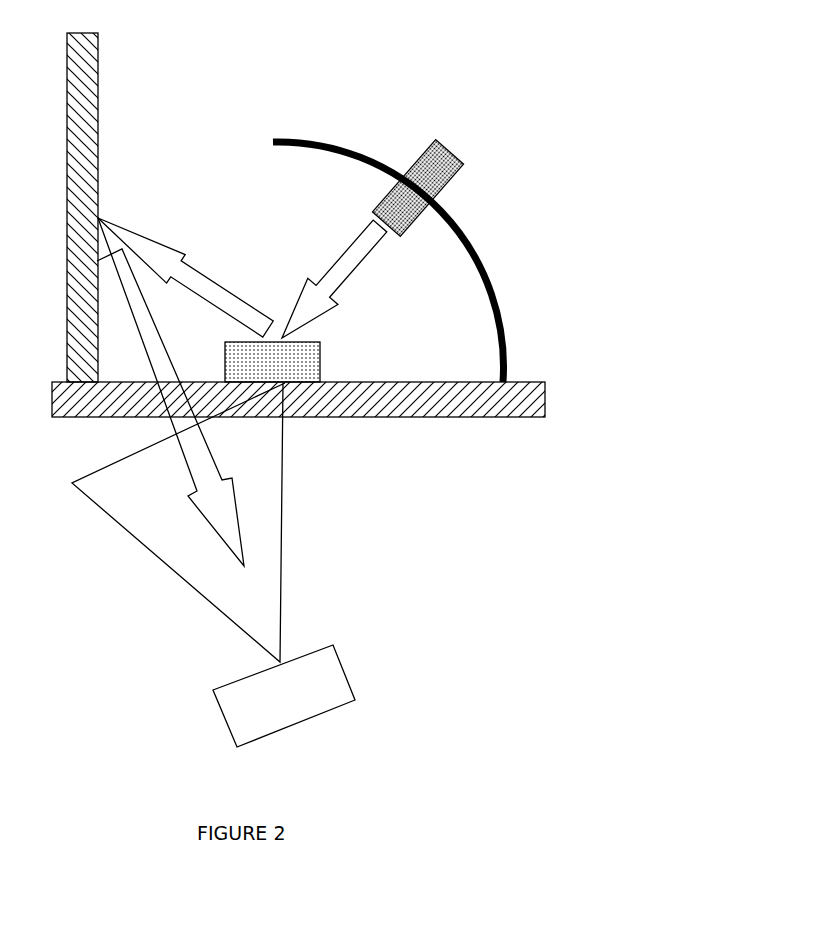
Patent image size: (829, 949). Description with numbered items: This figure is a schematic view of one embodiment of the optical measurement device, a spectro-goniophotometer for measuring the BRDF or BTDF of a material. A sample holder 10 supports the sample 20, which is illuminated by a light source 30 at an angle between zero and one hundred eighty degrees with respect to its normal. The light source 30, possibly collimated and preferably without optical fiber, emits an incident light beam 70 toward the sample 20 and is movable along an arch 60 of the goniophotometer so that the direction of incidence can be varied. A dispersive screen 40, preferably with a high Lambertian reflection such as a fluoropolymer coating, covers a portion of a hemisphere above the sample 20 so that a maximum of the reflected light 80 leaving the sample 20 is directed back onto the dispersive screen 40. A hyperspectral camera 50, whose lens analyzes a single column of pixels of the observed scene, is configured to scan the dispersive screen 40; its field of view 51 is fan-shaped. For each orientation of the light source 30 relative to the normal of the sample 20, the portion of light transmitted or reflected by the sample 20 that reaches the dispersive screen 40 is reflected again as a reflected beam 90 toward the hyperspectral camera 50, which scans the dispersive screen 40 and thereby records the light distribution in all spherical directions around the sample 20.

The sample holder 10 is at (559, 396).
The sample 20 is at (329, 374).
The light source 30 is at (468, 172).
The dispersive screen 40 is at (111, 92).
The hyperspectral camera 50 is at (354, 666).
The field of view 51 is at (296, 589).
The arch 60 is at (514, 306).
The incident light beam 70 is at (332, 244).
The reflected light 80 is at (165, 228).
The reflected beam 90 is at (176, 483).